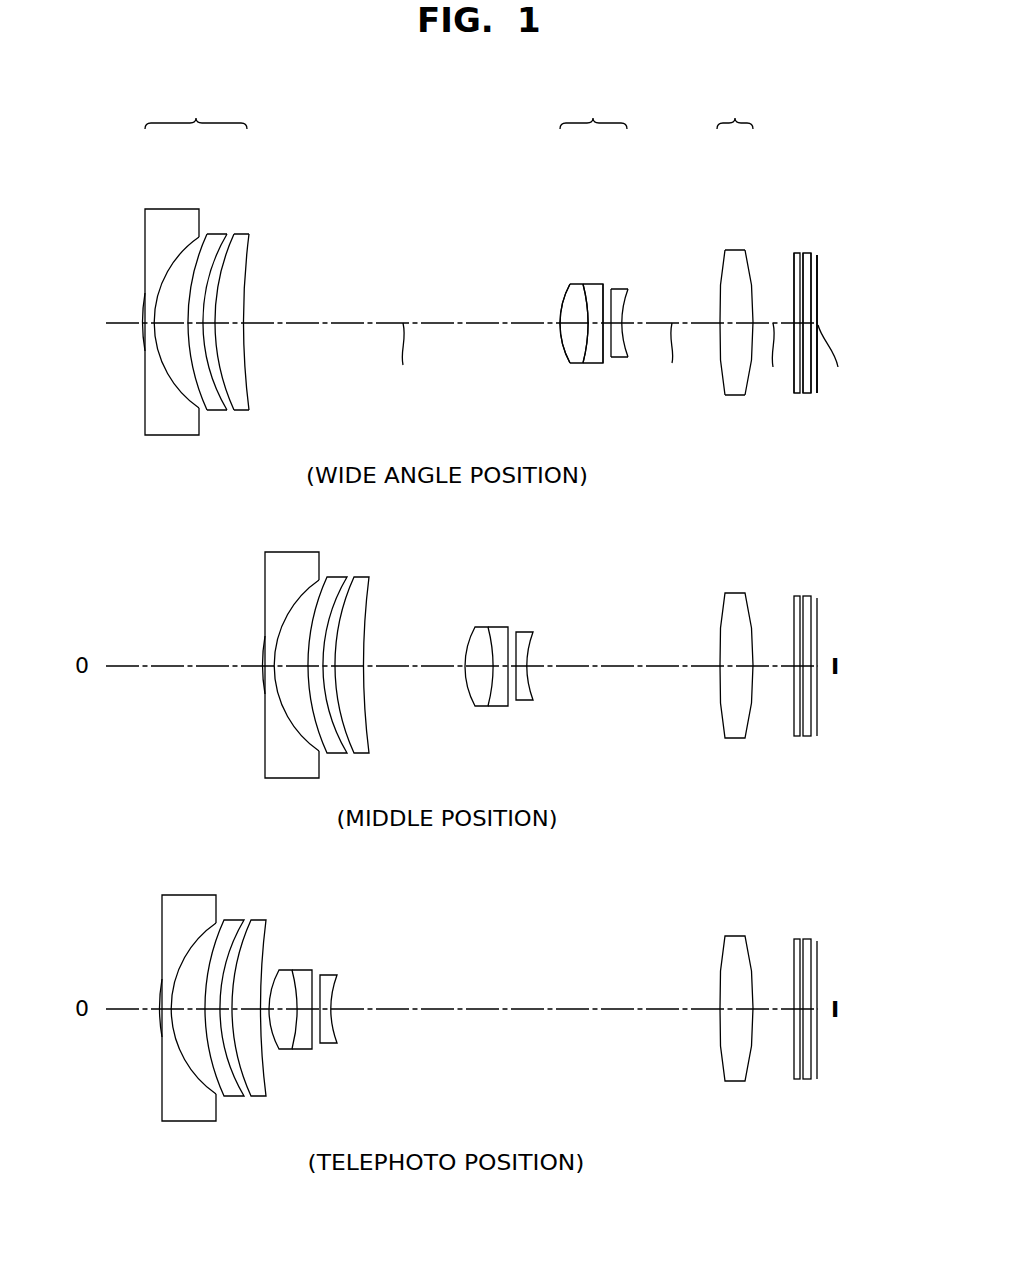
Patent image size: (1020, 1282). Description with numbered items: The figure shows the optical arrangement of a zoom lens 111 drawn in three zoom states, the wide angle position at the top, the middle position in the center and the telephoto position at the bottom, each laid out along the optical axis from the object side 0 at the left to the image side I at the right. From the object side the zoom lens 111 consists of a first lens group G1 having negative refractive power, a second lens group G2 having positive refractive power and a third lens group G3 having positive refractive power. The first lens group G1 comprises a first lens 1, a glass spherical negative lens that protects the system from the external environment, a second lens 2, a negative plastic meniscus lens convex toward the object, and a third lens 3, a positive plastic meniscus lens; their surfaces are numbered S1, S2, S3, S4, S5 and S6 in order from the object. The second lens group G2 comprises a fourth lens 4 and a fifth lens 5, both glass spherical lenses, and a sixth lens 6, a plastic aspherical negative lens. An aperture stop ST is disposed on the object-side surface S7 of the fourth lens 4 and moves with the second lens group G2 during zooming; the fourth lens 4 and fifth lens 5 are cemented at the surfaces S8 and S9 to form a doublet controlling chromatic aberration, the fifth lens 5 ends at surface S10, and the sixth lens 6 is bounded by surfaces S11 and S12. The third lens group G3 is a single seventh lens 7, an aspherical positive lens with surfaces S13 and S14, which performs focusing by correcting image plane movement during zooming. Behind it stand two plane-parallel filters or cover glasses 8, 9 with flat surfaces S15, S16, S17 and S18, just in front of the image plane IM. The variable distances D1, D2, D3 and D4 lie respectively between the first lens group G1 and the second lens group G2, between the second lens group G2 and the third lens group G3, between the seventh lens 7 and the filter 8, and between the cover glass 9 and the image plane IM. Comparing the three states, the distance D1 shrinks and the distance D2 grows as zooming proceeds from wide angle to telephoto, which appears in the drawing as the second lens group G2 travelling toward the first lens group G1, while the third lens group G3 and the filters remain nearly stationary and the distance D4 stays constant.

The zoom lens 111 is at (422, 131).
The first lens group G1 is at (196, 111).
The second lens group G2 is at (593, 111).
The third lens group G3 is at (735, 111).
The first lens 1 is at (170, 435).
The second lens 2 is at (216, 410).
The third lens 3 is at (243, 410).
The fourth lens 4 is at (575, 363).
The fifth lens 5 is at (592, 363).
The sixth lens 6 is at (618, 357).
The seventh lens 7 is at (736, 396).
The filter or cover glass 8 is at (795, 393).
The filter or cover glass 9 is at (807, 393).
The first lens surface S1 is at (143, 247).
The second lens surface S2 is at (177, 255).
The third lens surface S3 is at (200, 245).
The fourth lens surface S4 is at (225, 247).
The fifth lens surface S5 is at (236, 250).
The sixth lens surface S6 is at (249, 270).
The seventh lens surface S7 is at (561, 300).
The aperture stop ST is at (565, 323).
The eighth lens surface S8 is at (583, 292).
The ninth lens surface S9 is at (585, 323).
The tenth lens surface S10 is at (588, 305).
The eleventh lens surface S11 is at (616, 292).
The twelfth lens surface S12 is at (628, 302).
The thirteenth lens surface S13 is at (721, 282).
The fourteenth lens surface S14 is at (752, 278).
The fifteenth surface S15 is at (795, 272).
The sixteenth surface S16 is at (803, 287).
The seventeenth surface S17 is at (812, 270).
The eighteenth surface S18 is at (818, 298).
The first variable distance D1 is at (400, 359).
The second variable distance D2 is at (673, 359).
The third variable distance D3 is at (773, 359).
The fourth variable distance D4 is at (838, 360).
The image plane IM is at (818, 393).
The image side I is at (827, 324).
The object side 0 is at (446, 322).